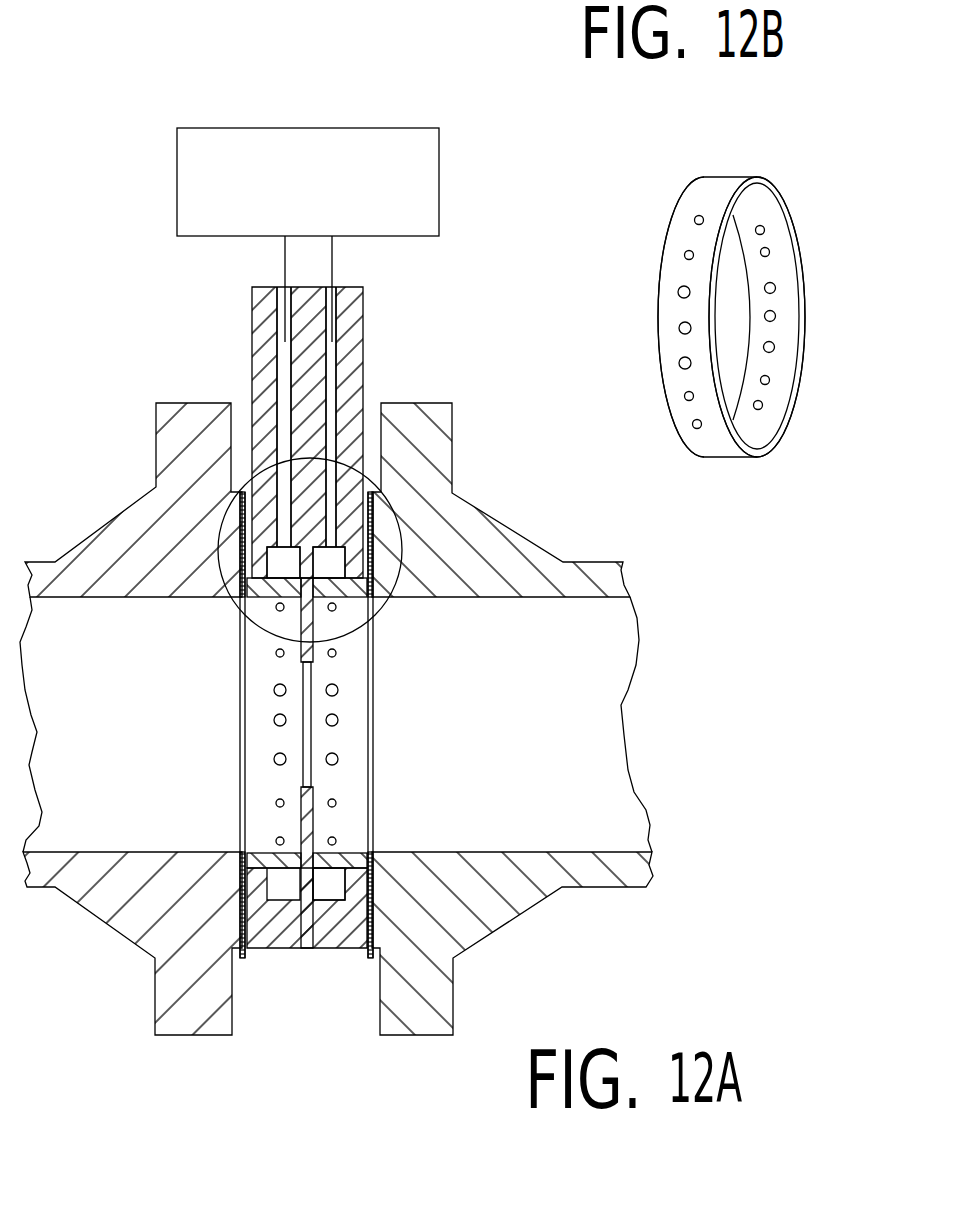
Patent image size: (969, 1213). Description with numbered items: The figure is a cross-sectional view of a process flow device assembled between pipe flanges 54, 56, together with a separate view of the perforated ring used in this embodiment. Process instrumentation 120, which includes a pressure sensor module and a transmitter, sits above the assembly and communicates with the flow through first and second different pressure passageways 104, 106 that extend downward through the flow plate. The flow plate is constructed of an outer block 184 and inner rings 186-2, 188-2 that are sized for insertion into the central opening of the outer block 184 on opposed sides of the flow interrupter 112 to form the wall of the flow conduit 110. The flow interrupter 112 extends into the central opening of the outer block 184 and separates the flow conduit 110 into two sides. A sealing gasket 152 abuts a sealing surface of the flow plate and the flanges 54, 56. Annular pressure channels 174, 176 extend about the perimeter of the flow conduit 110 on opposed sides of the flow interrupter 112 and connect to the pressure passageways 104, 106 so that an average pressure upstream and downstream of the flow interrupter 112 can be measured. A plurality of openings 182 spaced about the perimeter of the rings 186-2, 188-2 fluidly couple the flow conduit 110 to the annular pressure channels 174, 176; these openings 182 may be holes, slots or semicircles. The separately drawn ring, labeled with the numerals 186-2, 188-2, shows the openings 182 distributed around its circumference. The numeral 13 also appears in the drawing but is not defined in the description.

In FIG. 12A, the process instrumentation 120 is at (406, 124).
In FIG. 12A, the first pressure passageway 104 is at (290, 346).
In FIG. 12A, the second pressure passageway 106 is at (328, 346).
In FIG. 12A, the outer block 184 is at (366, 371).
In FIG. 12A, the flange 54 is at (168, 403).
In FIG. 12A, the flange 56 is at (454, 394).
In FIG. 12A, the sealing gasket 152 is at (243, 522).
In FIG. 12A, the ring 186-2 is at (248, 603).
In FIG. 12B, the ring 186-2 is at (700, 178).
In FIG. 12A, the ring 188-2 is at (370, 603).
In FIG. 12B, the ring 188-2 is at (731, 317).
In FIG. 12A, the flow conduit 110 is at (263, 638).
In FIG. 12A, the second electrode 13 is at (347, 632).
In FIG. 12A, the openings 182 is at (274, 759).
In FIG. 12B, the openings 182 is at (780, 288).
In FIG. 12A, the flow interrupter 112 is at (327, 832).
In FIG. 12A, the annular pressure channel 174 is at (280, 880).
In FIG. 12A, the annular pressure channel 176 is at (330, 880).